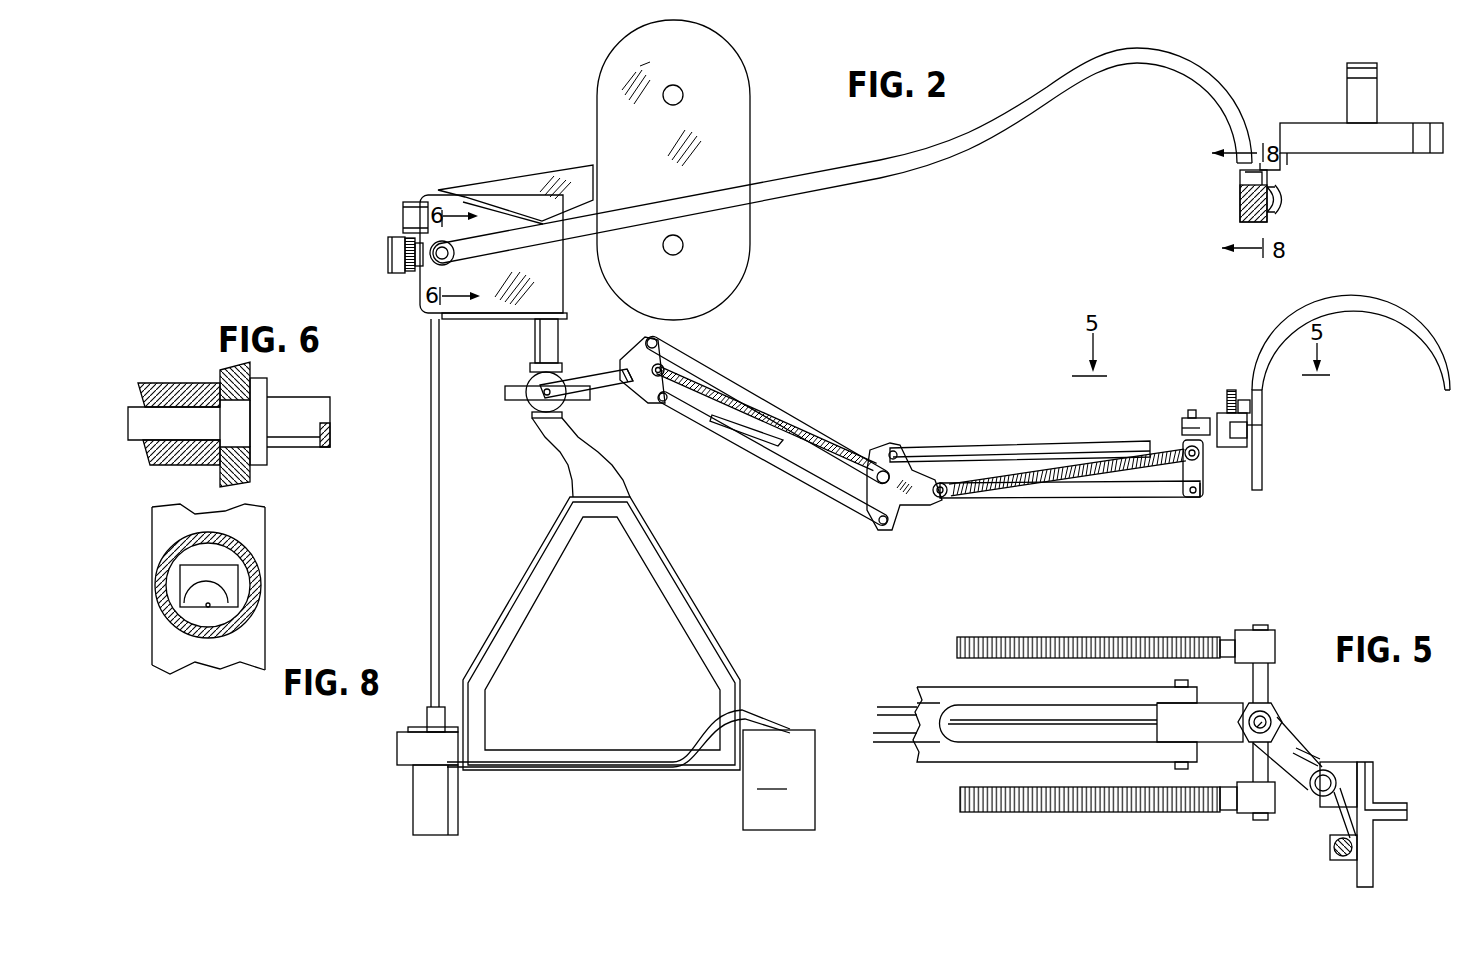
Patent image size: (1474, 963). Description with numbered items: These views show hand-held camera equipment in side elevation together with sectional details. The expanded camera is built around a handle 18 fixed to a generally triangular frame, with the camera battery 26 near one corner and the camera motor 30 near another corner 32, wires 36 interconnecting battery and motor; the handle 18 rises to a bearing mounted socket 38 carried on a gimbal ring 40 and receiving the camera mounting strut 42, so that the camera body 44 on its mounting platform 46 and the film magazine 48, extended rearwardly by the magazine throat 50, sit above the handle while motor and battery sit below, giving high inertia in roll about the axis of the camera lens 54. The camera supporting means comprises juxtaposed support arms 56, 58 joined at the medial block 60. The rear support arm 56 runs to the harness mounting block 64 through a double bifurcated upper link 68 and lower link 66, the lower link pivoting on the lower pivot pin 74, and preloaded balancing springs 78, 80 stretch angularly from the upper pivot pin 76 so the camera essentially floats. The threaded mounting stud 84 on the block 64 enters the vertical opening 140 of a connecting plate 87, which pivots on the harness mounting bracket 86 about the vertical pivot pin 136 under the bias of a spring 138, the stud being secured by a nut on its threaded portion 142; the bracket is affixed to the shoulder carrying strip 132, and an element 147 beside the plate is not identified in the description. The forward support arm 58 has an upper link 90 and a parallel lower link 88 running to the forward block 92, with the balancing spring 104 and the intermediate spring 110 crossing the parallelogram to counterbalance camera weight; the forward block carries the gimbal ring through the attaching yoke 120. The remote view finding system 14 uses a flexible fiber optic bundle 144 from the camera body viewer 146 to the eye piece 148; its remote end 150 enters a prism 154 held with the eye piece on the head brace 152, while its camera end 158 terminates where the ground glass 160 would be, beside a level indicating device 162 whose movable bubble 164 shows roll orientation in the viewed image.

In FIG. 2, the remote view finding system 14 is at (857, 155).
In FIG. 2, the handle 18 is at (600, 469).
In FIG. 2, the camera battery 26 is at (779, 780).
In FIG. 2, the camera motor 30 is at (407, 760).
In FIG. 2, the corner 32 is at (490, 750).
In FIG. 2, the wires 36 is at (670, 760).
In FIG. 2, the socket bearing 38 is at (530, 379).
In FIG. 2, the gimbal ring 40 is at (508, 401).
In FIG. 2, the camera mounting strut 42 is at (558, 336).
In FIG. 2, the camera body 44 is at (438, 190).
In FIG. 2, the mounting platform 46 is at (482, 320).
In FIG. 2, the film magazine 48 is at (735, 68).
In FIG. 2, the magazine throat 50 is at (538, 187).
In FIG. 2, the camera lens 54 is at (388, 253).
In FIG. 2, the support arm 56 is at (1066, 471).
In FIG. 2, the support arm 58 is at (768, 448).
In FIG. 2, the medial block 60 is at (895, 506).
In FIG. 2, the harness mounting block 64 is at (1205, 460).
In FIG. 5, the harness mounting block 64 is at (1225, 692).
In FIG. 2, the lower link 66 is at (1085, 497).
In FIG. 5, the lower link 66 is at (1040, 706).
In FIG. 2, the upper link 68 is at (937, 428).
In FIG. 5, the upper link 68 is at (995, 690).
In FIG. 2, the lower pivot pin 74 is at (1193, 497).
In FIG. 2, the upper pivot pin 76 is at (1202, 490).
In FIG. 5, the upper pivot pin 76 is at (1263, 821).
In FIG. 5, the balancing spring 78 is at (1168, 637).
In FIG. 2, the balancing spring 80 is at (1040, 470).
In FIG. 5, the balancing spring 80 is at (1192, 812).
In FIG. 2, the threaded mounting stud 84 is at (1184, 416).
In FIG. 5, the threaded mounting stud 84 is at (1260, 728).
In FIG. 2, the harness mounting bracket 86 is at (1250, 415).
In FIG. 5, the harness mounting bracket 86 is at (1350, 768).
In FIG. 2, the connecting plate 87 is at (1247, 436).
In FIG. 5, the connecting plate 87 is at (1305, 746).
In FIG. 2, the lower link 88 is at (852, 520).
In FIG. 2, the upper link 90 is at (792, 418).
In FIG. 2, the forward block 92 is at (640, 396).
In FIG. 2, the balancing spring 104 is at (740, 394).
In FIG. 2, the intermediate spring 110 is at (770, 437).
In FIG. 2, the attaching yoke 120 is at (585, 382).
In FIG. 2, the carrying strip 132 is at (1420, 300).
In FIG. 5, the carrying strip 132 is at (1375, 866).
In FIG. 2, the vertical pivot pin 136 is at (1243, 400).
In FIG. 5, the vertical pivot pin 136 is at (1318, 796).
In FIG. 2, the spring 138 is at (1230, 390).
In FIG. 5, the spring 138 is at (1338, 848).
In FIG. 2, the vertical opening 140 is at (1183, 430).
In FIG. 5, the vertical opening 140 is at (1272, 712).
In FIG. 2, the threaded portion 142 is at (1192, 410).
In FIG. 5, the threaded portion 142 is at (1266, 722).
In FIG. 2, the fiber optic bundle 144 is at (870, 182).
In FIG. 2, the camera body viewer 146 is at (436, 264).
In FIG. 6, the camera body viewer 146 is at (262, 466).
In FIG. 2, the bore 147 is at (1250, 425).
In FIG. 2, the eye piece 148 is at (1278, 200).
In FIG. 8, the eye piece 148 is at (262, 581).
In FIG. 2, the end of fiber optic bundle 150 is at (1213, 81).
In FIG. 2, the head brace 152 is at (1395, 122).
In FIG. 2, the prism 154 is at (1240, 195).
In FIG. 2, the camera end 158 is at (451, 244).
In FIG. 6, the camera end 158 is at (305, 441).
In FIG. 6, the ground glass 160 is at (218, 385).
In FIG. 6, the level indicating device 162 is at (217, 422).
In FIG. 8, the level indicating device 162 is at (187, 587).
In FIG. 6, the movable bubble 164 is at (178, 452).
In FIG. 8, the movable bubble 164 is at (208, 608).